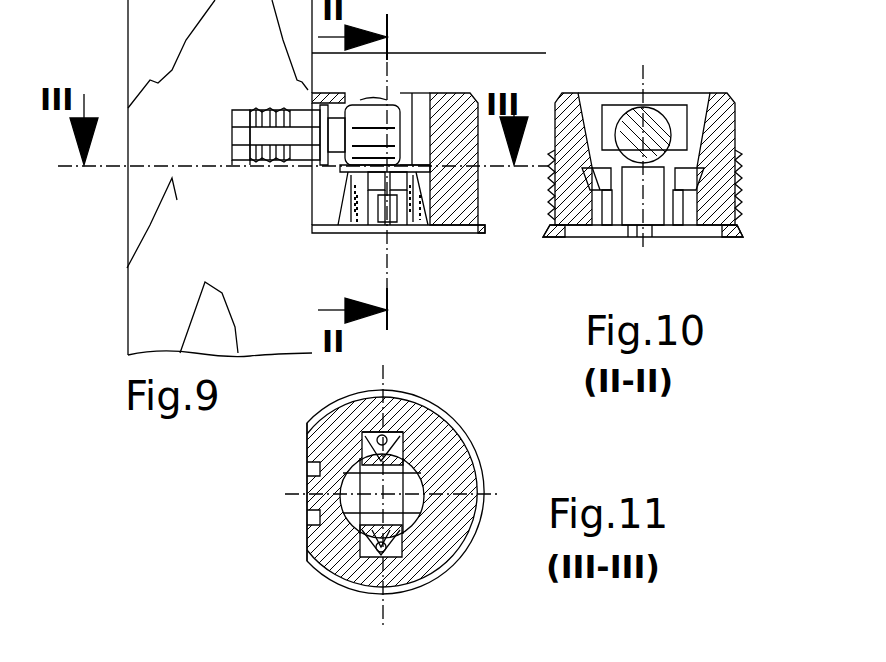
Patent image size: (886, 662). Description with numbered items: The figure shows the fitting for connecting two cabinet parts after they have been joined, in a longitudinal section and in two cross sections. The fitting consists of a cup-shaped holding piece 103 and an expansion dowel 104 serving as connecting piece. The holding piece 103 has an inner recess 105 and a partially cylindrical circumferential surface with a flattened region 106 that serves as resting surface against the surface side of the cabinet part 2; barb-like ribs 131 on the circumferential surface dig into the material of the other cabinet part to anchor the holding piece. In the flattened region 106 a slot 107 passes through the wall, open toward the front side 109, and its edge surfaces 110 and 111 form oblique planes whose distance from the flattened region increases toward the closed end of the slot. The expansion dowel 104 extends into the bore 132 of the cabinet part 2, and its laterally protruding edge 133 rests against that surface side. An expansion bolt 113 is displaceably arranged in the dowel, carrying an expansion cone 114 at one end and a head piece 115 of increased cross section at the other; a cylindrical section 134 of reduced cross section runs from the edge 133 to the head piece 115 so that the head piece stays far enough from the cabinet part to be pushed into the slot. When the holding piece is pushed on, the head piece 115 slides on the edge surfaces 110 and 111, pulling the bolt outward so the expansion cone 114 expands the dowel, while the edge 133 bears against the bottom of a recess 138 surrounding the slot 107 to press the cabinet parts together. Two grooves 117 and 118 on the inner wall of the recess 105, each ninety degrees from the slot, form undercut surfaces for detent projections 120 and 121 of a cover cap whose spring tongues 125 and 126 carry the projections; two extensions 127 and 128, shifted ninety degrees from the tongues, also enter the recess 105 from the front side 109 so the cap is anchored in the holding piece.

In FIG. 9, the cabinet part 2 is at (126, 303).
In FIG. 9, the holding piece 103 is at (441, 93).
In FIG. 10, the holding piece 103 is at (712, 93).
In FIG. 11, the holding piece 103 is at (477, 533).
In FIG. 9, the expansion dowel 104 is at (274, 108).
In FIG. 9, the inner recess 105 is at (418, 160).
In FIG. 10, the inner recess 105 is at (588, 102).
In FIG. 11, the inner recess 105 is at (411, 503).
In FIG. 11, the flattened region 106 is at (307, 447).
In FIG. 11, the slot 107 is at (331, 497).
In FIG. 9, the front side 109 is at (470, 236).
In FIG. 10, the front side 109 is at (731, 238).
In FIG. 9, the edge surface 110 is at (340, 200).
In FIG. 9, the edge surface 111 is at (347, 226).
In FIG. 9, the expansion bolt 113 is at (341, 112).
In FIG. 9, the expansion cone 114 is at (242, 110).
In FIG. 9, the head piece 115 is at (393, 107).
In FIG. 10, the head piece 115 is at (652, 120).
In FIG. 11, the groove 117 is at (388, 563).
In FIG. 11, the groove 118 is at (393, 432).
In FIG. 10, the detent projection 120 is at (590, 167).
In FIG. 11, the detent projection 120 is at (370, 548).
In FIG. 10, the detent projection 121 is at (697, 173).
In FIG. 11, the detent projection 121 is at (367, 428).
In FIG. 10, the spring tongue 125 is at (607, 213).
In FIG. 9, the spring tongue 126 is at (378, 218).
In FIG. 10, the spring tongue 126 is at (681, 213).
In FIG. 9, the extension 127 is at (358, 213).
In FIG. 10, the extension 127 is at (631, 214).
In FIG. 9, the extension 128 is at (419, 210).
In FIG. 10, the barb-like ribs 131 is at (735, 190).
In FIG. 11, the barb-like ribs 131 is at (432, 411).
In FIG. 9, the bore 132 is at (241, 168).
In FIG. 9, the edge 133 is at (323, 103).
In FIG. 9, the cylindrical section 134 is at (327, 168).
In FIG. 11, the recess 138 is at (306, 468).